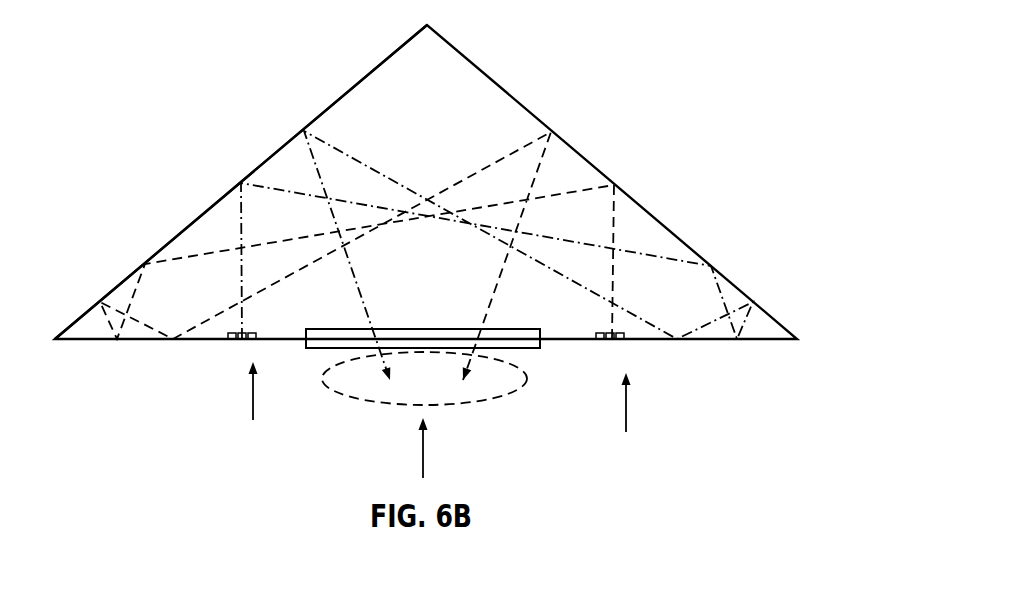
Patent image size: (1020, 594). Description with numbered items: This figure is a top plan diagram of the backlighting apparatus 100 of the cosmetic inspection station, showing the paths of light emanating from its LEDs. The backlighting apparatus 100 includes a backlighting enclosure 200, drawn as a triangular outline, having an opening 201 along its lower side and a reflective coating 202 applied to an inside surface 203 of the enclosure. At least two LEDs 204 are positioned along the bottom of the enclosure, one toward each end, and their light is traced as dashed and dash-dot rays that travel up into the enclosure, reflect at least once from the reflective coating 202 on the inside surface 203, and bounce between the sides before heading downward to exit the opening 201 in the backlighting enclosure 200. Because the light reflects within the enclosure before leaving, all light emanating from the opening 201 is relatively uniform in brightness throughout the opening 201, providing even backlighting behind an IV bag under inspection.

The backlighting apparatus 100 is at (426, 174).
The backlighting enclosure 200 is at (527, 55).
The opening 201 is at (512, 348).
The reflective coating 202 is at (241, 182).
The inside surface 203 is at (358, 76).
The LEDs 204 is at (242, 340).